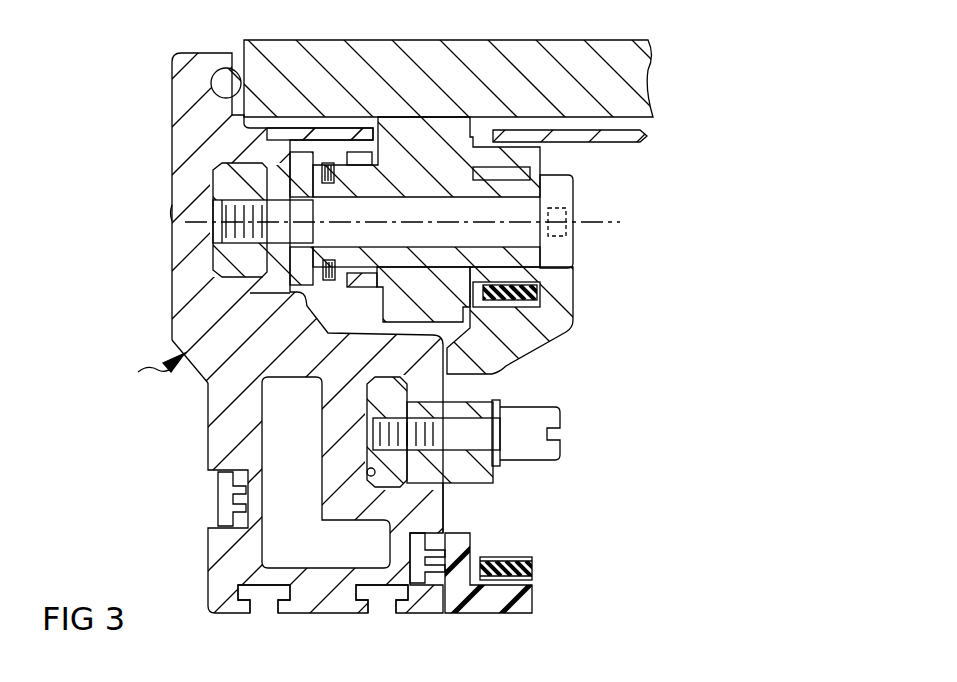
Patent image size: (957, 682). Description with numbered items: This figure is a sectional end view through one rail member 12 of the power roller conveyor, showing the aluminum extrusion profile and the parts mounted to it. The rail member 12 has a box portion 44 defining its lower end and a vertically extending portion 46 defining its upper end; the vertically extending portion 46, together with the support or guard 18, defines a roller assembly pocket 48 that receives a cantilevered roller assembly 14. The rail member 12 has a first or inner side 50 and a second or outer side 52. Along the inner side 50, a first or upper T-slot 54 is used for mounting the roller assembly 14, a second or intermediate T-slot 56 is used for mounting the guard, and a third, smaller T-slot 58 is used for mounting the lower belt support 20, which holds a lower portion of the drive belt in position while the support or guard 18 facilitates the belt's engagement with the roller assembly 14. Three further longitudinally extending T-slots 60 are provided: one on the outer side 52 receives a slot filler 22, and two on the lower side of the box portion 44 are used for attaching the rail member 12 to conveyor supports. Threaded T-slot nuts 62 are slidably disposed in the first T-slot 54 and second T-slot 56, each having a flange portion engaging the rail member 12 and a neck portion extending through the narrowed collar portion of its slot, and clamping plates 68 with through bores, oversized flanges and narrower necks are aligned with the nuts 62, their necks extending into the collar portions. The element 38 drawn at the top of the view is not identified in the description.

The rail member 12 is at (146, 368).
The cantilevered roller assembly 14 is at (378, 115).
The support or guard 18 is at (533, 340).
The lower belt support 20 is at (518, 613).
The slot filler 22 is at (214, 492).
The table plate 38 is at (613, 40).
The box portion 44 is at (208, 437).
The vertically extending portion 46 is at (172, 121).
The roller assembly pocket 48 is at (290, 293).
The first or inner side 50 is at (447, 492).
The second or outer side 52 is at (199, 373).
The first or upper T-slot 54 is at (213, 258).
The second or intermediate T-slot 56 is at (367, 472).
The third, smaller T-slot 58 is at (440, 540).
The longitudinally extending T-slot 60 is at (227, 522).
The threaded T-slot nut 62 is at (367, 395).
The clamping plate 68 is at (292, 151).